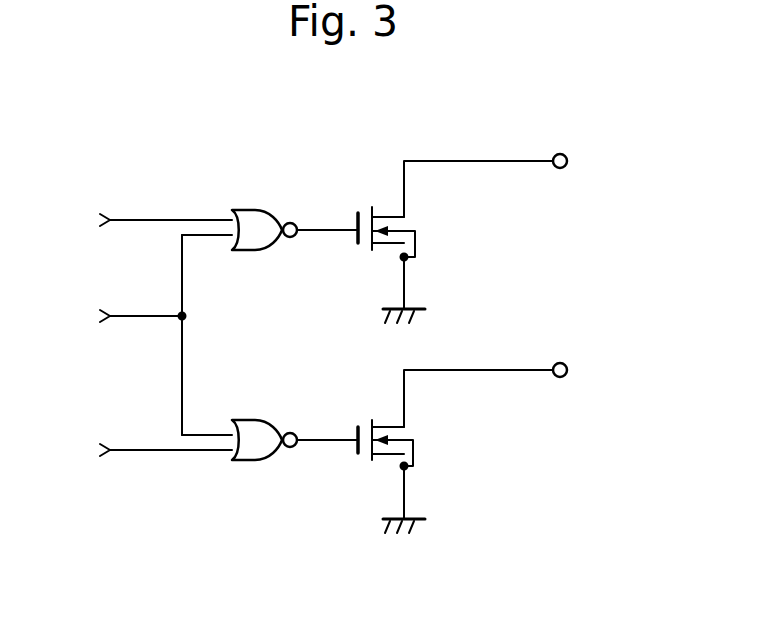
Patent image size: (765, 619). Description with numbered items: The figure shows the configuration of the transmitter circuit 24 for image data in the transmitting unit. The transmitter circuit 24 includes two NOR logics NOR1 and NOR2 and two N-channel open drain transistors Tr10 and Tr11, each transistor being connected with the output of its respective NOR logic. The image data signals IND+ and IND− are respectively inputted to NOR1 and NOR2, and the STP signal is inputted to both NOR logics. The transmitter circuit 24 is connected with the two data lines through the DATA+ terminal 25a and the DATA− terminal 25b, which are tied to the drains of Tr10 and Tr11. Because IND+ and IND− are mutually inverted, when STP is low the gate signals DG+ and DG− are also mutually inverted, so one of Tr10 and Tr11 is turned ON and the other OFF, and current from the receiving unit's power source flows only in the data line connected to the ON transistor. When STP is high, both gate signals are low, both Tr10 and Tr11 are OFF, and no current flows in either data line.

The transmitter circuit 24 is at (364, 578).
The DATA+ terminal 25a is at (560, 153).
The DATA− terminal 25b is at (560, 362).
The NOR logic NOR1 is at (253, 208).
The NOR logic NOR2 is at (253, 418).
The N-channel open drain transistor Tr10 is at (415, 244).
The N-channel open drain transistor Tr11 is at (413, 456).